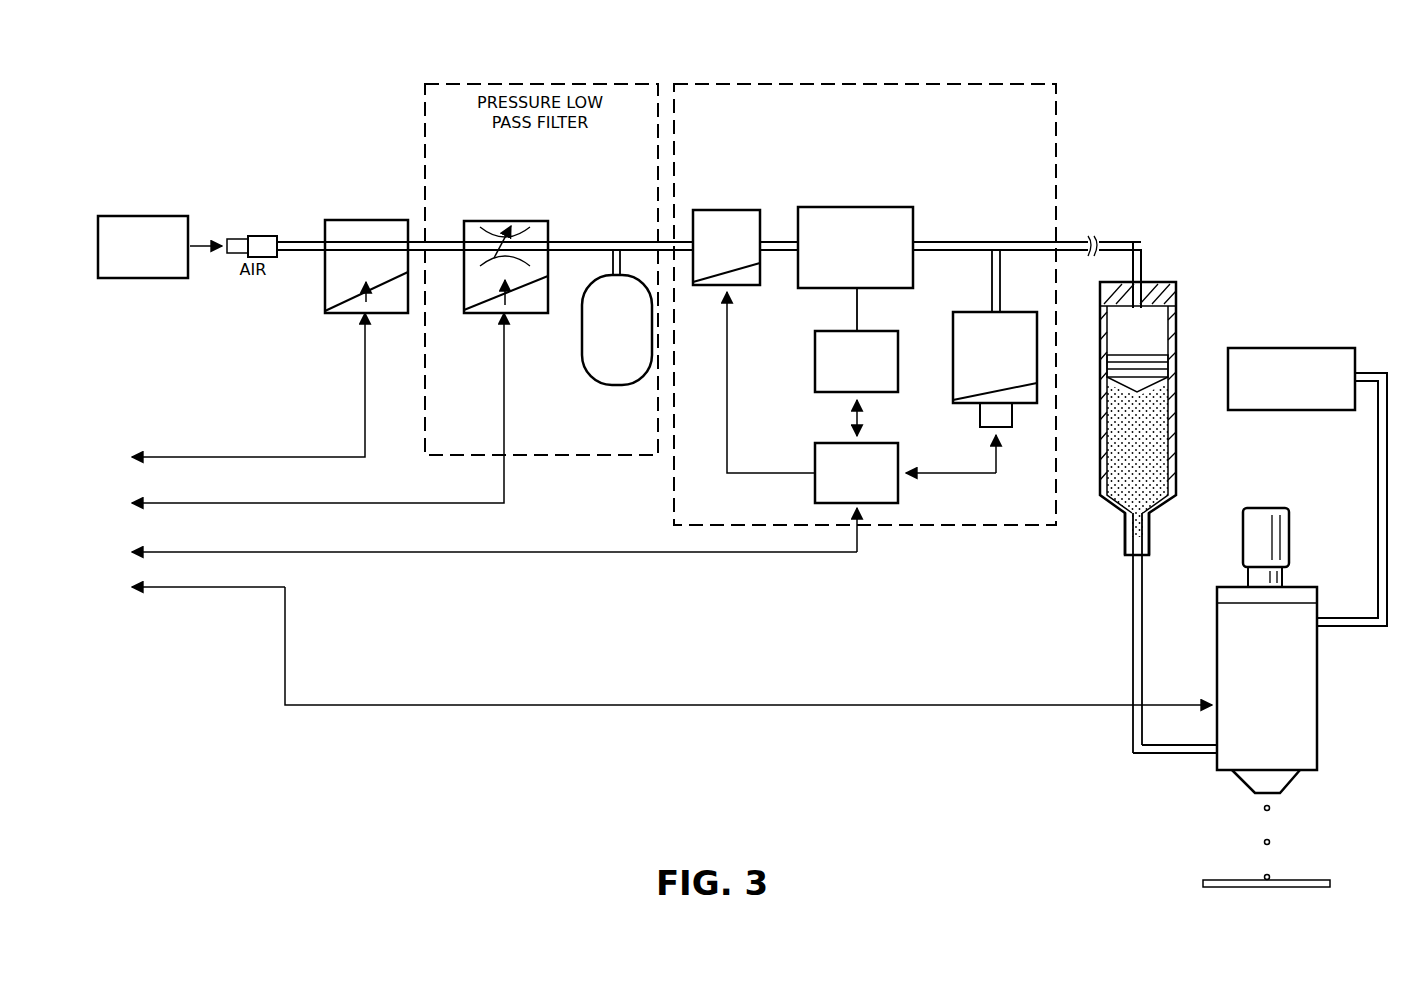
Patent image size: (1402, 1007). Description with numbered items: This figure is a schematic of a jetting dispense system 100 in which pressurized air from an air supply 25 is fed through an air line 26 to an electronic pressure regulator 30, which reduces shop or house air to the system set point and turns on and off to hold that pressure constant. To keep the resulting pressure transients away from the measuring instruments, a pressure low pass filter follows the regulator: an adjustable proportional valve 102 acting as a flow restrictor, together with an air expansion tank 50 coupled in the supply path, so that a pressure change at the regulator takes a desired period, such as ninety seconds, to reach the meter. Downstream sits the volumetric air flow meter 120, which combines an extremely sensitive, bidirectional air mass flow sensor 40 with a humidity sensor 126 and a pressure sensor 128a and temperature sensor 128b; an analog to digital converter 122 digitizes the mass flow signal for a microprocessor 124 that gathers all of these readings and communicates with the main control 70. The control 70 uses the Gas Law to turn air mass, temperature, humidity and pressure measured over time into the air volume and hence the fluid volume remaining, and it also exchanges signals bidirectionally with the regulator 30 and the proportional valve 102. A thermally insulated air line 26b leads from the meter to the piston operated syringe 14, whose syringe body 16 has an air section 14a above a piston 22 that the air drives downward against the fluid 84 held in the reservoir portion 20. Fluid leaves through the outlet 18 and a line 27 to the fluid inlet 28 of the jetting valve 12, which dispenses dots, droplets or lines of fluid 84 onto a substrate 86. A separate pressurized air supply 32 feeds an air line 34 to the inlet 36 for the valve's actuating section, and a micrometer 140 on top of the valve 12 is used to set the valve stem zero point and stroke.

The system 100 is at (1192, 128).
The volumetric air flow meter 120 is at (1056, 125).
The air supply 25 is at (130, 216).
The air line 26 is at (298, 252).
The pressure regulator 30 is at (342, 316).
The proportional valve 102 is at (530, 314).
The tank 50 is at (615, 385).
The humidity sensor 126 is at (728, 210).
The air mass flow sensor 40 is at (863, 207).
The analog to digital converter 122 is at (815, 361).
The microprocessor 124 is at (897, 492).
The pressure sensor 128a is at (953, 343).
The temperature sensor 128b is at (953, 379).
The air line 26b is at (1141, 240).
The syringe 14 is at (1182, 281).
The air section 14a is at (1154, 328).
The syringe body 16 is at (1176, 396).
The piston 22 is at (1140, 372).
The reservoir portion 20 is at (1176, 442).
The fluid 84 is at (1262, 841).
The outlet 18 is at (1124, 540).
The line 27 is at (1133, 655).
The fluid inlet 28 is at (1211, 757).
The micrometer 140 is at (1268, 505).
The valve 12 is at (1271, 745).
The pressurized air supply 32 is at (1268, 348).
The air line 34 is at (1378, 500).
The inlet 36 is at (1319, 630).
The substrate 86 is at (1313, 878).
The control 70 is at (178, 432).